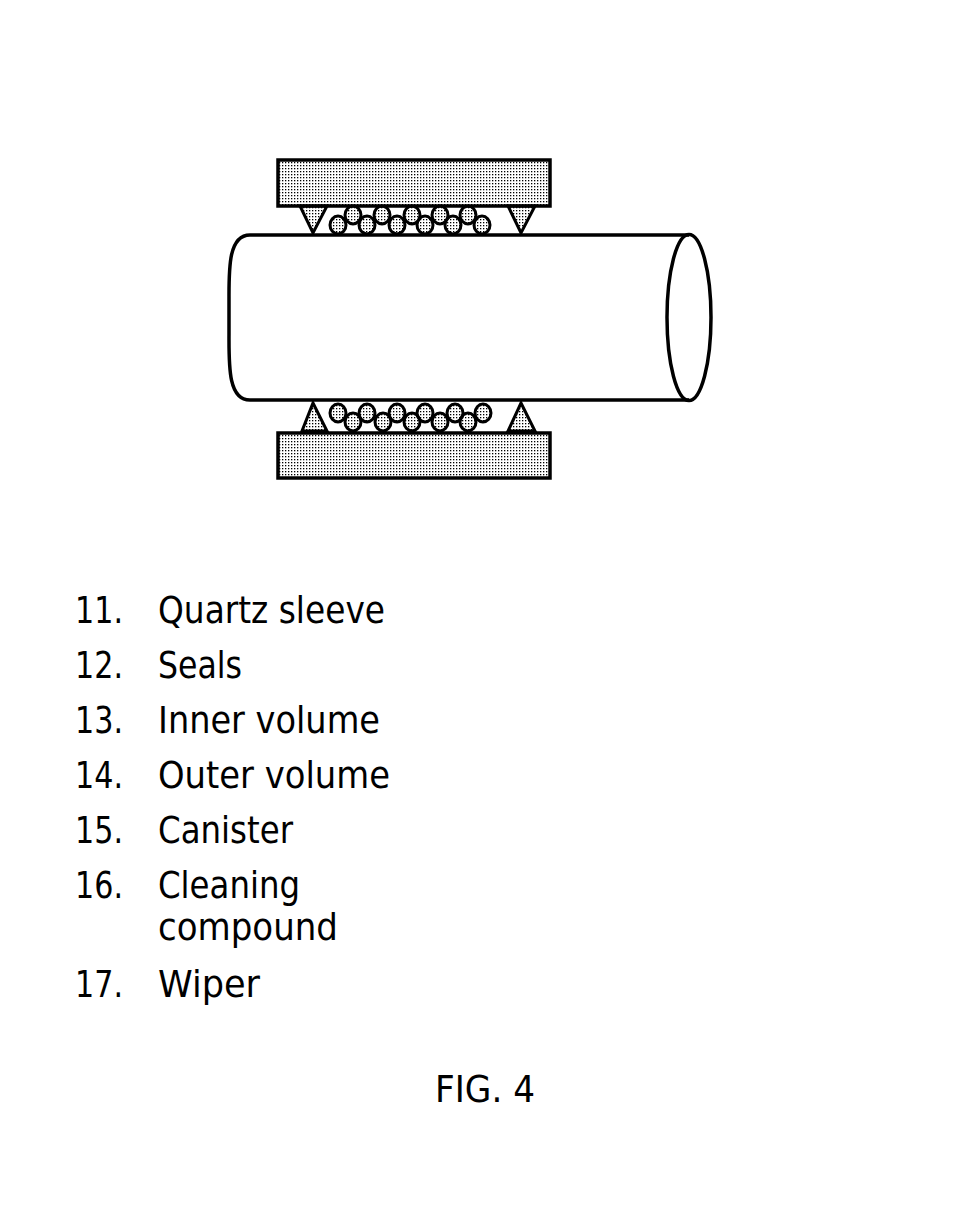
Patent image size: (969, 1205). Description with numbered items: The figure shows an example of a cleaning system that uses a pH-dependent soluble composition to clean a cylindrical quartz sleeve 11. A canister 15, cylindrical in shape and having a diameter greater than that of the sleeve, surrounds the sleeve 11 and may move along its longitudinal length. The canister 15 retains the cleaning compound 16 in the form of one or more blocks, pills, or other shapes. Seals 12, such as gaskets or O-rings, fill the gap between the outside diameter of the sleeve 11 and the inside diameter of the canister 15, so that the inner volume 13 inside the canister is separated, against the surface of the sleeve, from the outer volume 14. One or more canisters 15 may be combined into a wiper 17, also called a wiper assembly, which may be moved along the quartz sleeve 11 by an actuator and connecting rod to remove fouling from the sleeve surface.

The quartz sleeve 11 is at (603, 233).
The seals 12 is at (306, 203).
The inner volume 13 is at (495, 210).
The outer volume 14 is at (462, 108).
The canister 15 is at (403, 160).
The cleaning compound 16 is at (402, 213).
The wiper 17 is at (272, 457).